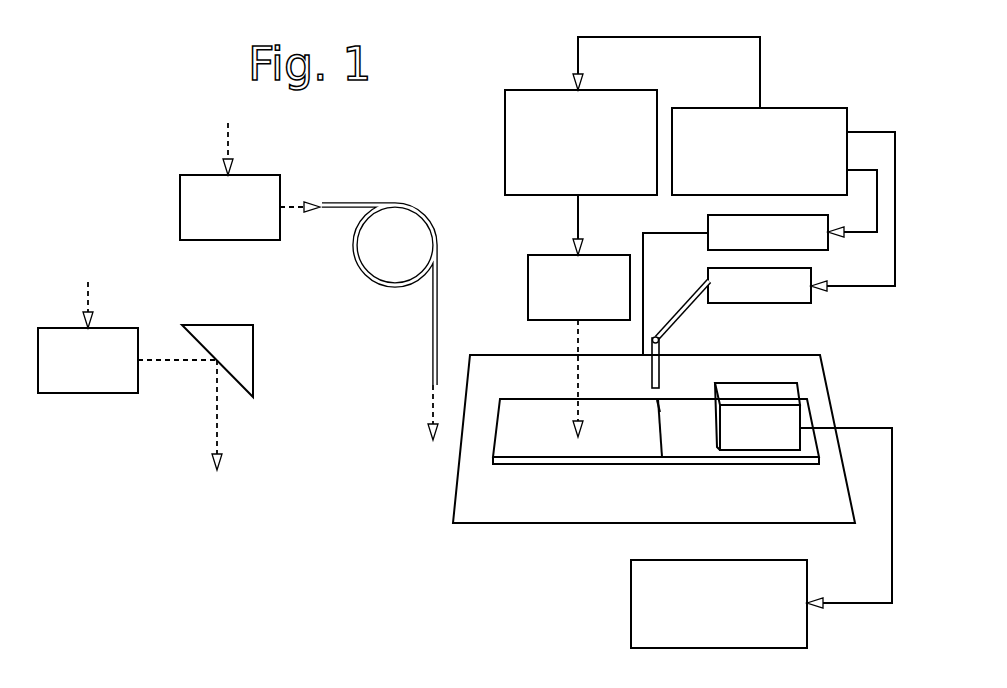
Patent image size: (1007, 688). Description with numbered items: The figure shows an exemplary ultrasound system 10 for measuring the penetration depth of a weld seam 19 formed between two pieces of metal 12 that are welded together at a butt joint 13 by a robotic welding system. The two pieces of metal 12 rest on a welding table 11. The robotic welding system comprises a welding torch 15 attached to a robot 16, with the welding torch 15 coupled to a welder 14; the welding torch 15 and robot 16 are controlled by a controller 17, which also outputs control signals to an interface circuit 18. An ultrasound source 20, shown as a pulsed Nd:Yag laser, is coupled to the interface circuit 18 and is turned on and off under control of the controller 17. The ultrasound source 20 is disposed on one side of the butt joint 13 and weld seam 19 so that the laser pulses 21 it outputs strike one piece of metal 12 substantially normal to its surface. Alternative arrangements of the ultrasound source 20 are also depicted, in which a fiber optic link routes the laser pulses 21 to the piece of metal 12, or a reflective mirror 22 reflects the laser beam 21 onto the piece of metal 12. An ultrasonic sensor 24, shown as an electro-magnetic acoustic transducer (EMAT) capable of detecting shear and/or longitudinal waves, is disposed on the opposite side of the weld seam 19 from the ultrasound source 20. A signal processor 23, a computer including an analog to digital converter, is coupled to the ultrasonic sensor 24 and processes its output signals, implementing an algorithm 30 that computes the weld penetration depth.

The ultrasound system 10 is at (823, 43).
The welding table 11 is at (457, 470).
The pieces of metal 12 is at (522, 465).
The butt joint 13 is at (660, 448).
The welder 14 is at (828, 246).
The welding torch 15 is at (652, 373).
The robot 16 is at (785, 303).
The controller 17 is at (703, 108).
The interface circuit 18 is at (525, 90).
The weld seam 19 is at (657, 408).
The ultrasound source 20 is at (150, 183).
The laser pulses 21 is at (216, 411).
The reflective mirror 22 is at (253, 337).
The signal processor 23 is at (355, 252).
The ultrasonic sensor 24 is at (716, 388).
The algorithm 30 is at (719, 604).